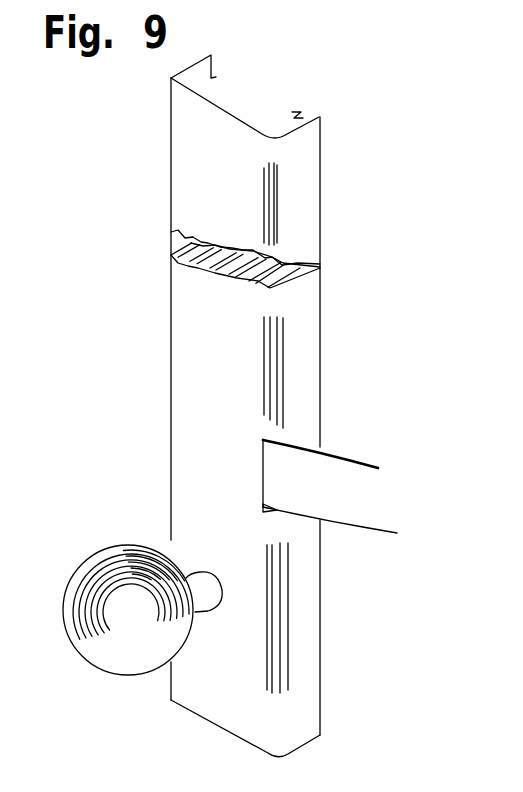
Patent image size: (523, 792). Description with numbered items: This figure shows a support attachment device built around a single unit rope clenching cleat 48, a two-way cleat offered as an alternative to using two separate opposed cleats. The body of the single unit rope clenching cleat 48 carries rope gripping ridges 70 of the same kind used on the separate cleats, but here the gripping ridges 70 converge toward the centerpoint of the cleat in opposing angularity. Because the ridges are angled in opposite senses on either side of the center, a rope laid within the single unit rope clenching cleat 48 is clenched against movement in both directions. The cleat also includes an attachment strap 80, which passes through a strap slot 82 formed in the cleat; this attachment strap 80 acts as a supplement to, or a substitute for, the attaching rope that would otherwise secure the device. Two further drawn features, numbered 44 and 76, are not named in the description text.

The single unit rope clenching cleat 48 is at (206, 137).
The serrated teeth 44 is at (308, 267).
The rope gripping ridges 70 is at (267, 287).
The attachment strap 80 is at (343, 472).
The strap slot 82 is at (270, 512).
The roll 76 is at (145, 672).